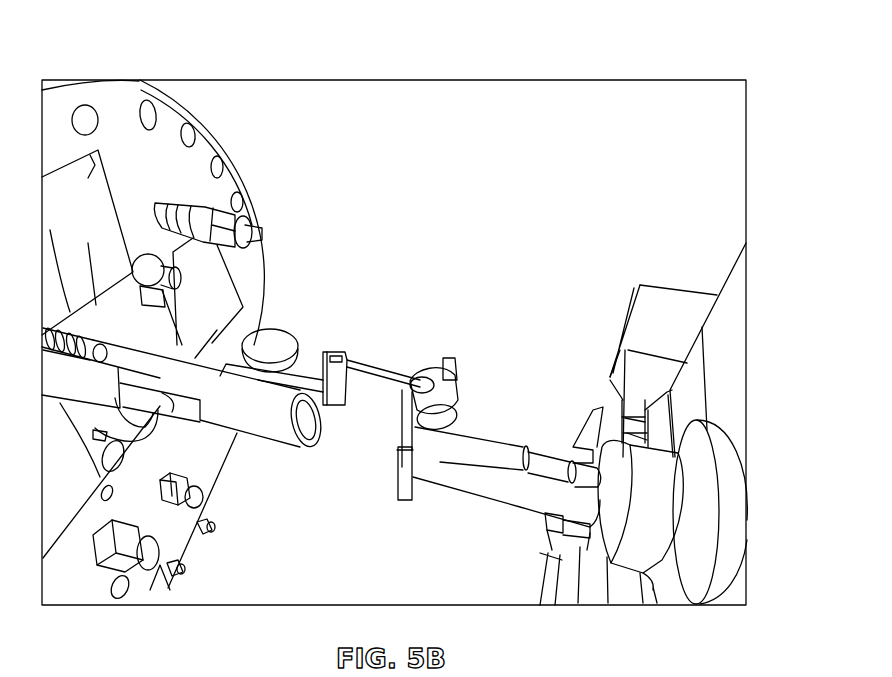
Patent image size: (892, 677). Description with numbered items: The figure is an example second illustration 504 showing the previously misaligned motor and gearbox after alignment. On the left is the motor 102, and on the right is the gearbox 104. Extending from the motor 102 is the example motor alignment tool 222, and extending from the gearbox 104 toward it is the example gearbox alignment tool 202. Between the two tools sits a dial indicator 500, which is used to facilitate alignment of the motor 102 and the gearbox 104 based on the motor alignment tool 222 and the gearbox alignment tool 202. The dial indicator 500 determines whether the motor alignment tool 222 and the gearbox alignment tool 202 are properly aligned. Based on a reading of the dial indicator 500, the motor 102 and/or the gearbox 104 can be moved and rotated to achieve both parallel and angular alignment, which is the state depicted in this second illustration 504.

The second illustration 504 is at (726, 38).
The motor 102 is at (240, 153).
The gearbox 104 is at (648, 253).
The motor alignment tool 222 is at (287, 465).
The dial indicator 500 is at (405, 323).
The gearbox alignment tool 202 is at (453, 517).